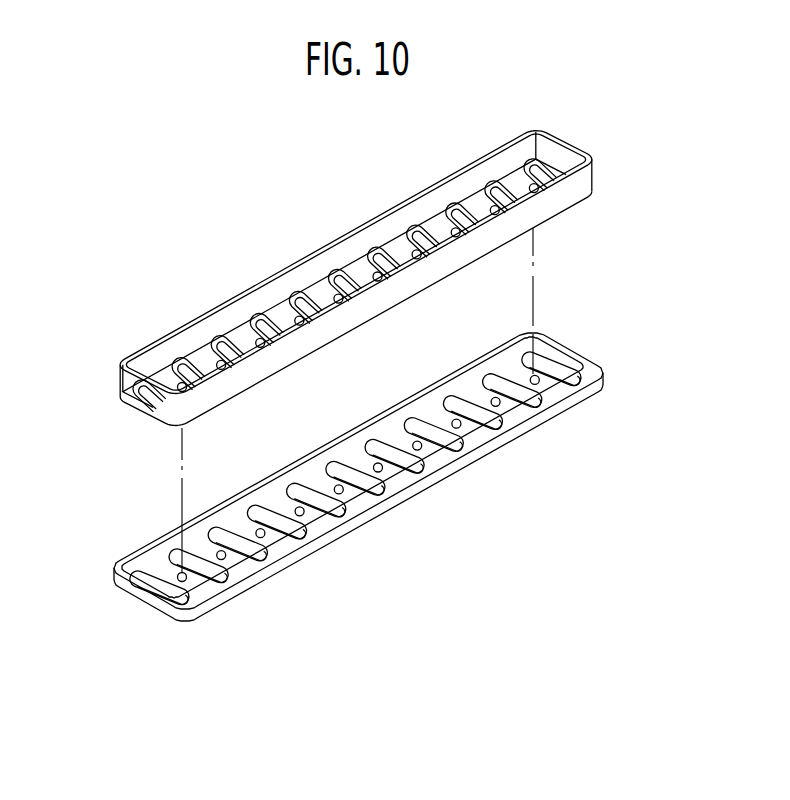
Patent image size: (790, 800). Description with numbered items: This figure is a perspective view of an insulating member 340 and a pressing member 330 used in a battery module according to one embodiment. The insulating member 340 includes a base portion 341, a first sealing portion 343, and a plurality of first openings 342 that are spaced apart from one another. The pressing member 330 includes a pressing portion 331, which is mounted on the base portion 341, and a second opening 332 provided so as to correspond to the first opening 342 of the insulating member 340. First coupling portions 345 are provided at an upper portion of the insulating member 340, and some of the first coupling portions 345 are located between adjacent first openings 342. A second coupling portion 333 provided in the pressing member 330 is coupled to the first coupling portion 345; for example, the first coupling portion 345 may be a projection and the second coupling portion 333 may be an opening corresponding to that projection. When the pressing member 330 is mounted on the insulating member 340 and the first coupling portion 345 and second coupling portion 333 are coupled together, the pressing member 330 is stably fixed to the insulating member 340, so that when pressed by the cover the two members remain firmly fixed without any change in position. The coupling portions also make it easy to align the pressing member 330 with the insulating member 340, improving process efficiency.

The pressing member 330 is at (117, 420).
The pressing portion 331 is at (513, 178).
The second opening 332 is at (464, 216).
The second coupling portion 333 is at (535, 185).
The insulating member 340 is at (108, 612).
The base portion 341 is at (471, 389).
The first opening 342 is at (430, 432).
The first sealing portion 343 is at (573, 350).
The first coupling portion 345 is at (498, 405).